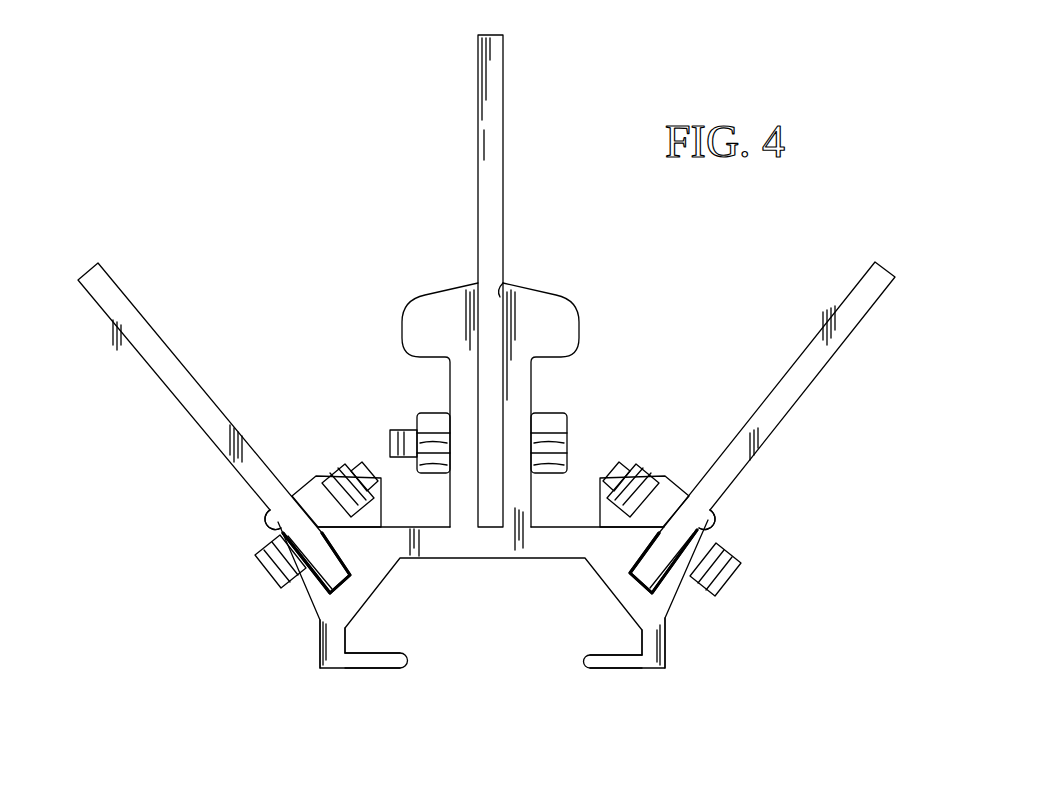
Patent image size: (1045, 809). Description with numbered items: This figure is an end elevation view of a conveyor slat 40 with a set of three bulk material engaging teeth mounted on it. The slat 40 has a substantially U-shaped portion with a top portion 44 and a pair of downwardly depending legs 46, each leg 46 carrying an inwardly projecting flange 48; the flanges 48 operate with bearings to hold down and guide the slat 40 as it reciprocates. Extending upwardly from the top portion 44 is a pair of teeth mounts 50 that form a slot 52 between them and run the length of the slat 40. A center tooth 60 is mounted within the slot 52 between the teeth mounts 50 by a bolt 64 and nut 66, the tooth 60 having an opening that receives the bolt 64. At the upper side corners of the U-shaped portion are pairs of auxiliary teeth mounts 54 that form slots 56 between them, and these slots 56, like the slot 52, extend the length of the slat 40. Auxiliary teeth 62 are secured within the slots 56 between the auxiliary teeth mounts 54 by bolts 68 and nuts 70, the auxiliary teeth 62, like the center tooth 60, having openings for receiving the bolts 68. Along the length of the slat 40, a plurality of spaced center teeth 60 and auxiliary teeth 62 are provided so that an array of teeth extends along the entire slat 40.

The conveyor slat 40 is at (364, 228).
The top portion 44 is at (548, 550).
The downwardly depending legs 46 is at (322, 652).
The inwardly projecting flange 48 is at (397, 667).
The teeth mounts 50 is at (400, 328).
The slot 52 is at (500, 285).
The auxiliary teeth mounts 54 is at (313, 497).
The slots 56 is at (268, 515).
The center tooth 60 is at (498, 123).
The auxiliary teeth 62 is at (150, 332).
The bolt 64 is at (567, 433).
The nut 66 is at (432, 417).
The bolts 68 is at (243, 558).
The nuts 70 is at (350, 470).